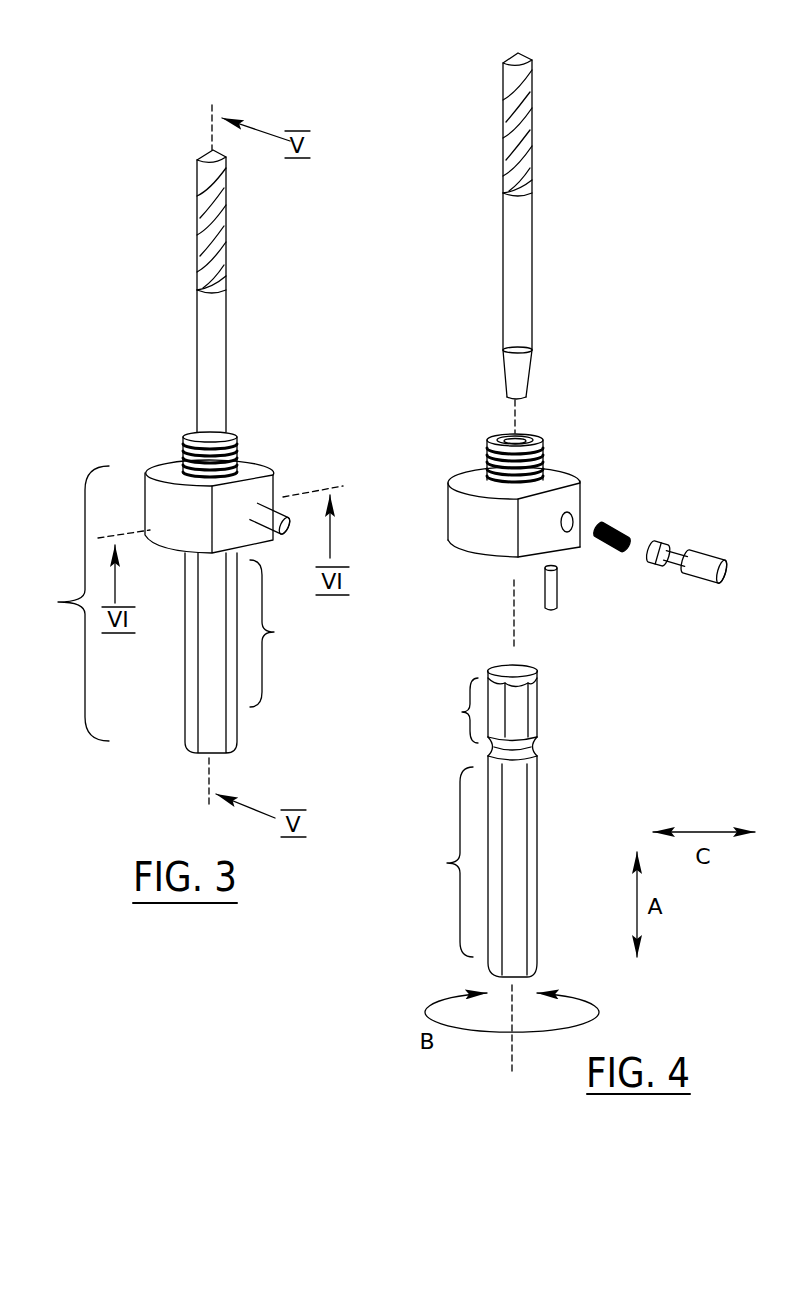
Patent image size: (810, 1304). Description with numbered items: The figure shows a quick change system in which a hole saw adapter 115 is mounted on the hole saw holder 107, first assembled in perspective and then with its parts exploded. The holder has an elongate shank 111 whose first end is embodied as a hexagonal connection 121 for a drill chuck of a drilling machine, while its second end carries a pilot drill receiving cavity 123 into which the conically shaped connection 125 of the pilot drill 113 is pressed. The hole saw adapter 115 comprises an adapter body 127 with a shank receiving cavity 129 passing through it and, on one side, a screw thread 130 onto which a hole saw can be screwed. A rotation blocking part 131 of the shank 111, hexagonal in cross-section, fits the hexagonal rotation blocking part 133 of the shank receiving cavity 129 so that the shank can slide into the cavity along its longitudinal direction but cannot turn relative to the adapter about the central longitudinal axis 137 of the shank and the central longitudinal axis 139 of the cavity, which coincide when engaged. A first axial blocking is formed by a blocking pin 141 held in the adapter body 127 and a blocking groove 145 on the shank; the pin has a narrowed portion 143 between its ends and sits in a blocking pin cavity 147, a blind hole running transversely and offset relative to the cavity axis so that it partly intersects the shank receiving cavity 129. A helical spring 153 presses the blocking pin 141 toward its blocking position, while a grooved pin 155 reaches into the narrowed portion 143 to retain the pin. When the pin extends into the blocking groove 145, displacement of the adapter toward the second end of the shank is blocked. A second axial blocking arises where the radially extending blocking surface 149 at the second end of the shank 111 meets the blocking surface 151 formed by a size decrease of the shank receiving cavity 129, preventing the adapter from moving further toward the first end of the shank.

In FIG. 3, the hole saw holder 107 is at (61, 603).
In FIG. 4, the elongate shank 111 is at (575, 788).
In FIG. 3, the pilot drill 113 is at (246, 329).
In FIG. 4, the pilot drill 113 is at (578, 252).
In FIG. 3, the hole saw adapter 115 is at (260, 442).
In FIG. 4, the hole saw adapter 115 is at (447, 491).
In FIG. 3, the connection 121 is at (250, 653).
In FIG. 4, the connection 121 is at (469, 866).
In FIG. 4, the pilot drill receiving cavity 123 is at (499, 661).
In FIG. 4, the conically shaped connection 125 is at (527, 343).
In FIG. 4, the adapter body 127 is at (560, 475).
In FIG. 4, the shank receiving cavity 129 is at (540, 421).
In FIG. 3, the screw thread 130 is at (183, 447).
In FIG. 4, the screw thread 130 is at (487, 452).
In FIG. 4, the rotation blocking part 131 is at (478, 704).
In FIG. 4, the rotation blocking part 133 is at (508, 440).
In FIG. 4, the central longitudinal axis 137 is at (510, 1052).
In FIG. 4, the central longitudinal axis 139 is at (518, 404).
In FIG. 4, the blocking pin 141 is at (712, 572).
In FIG. 4, the narrowed portion 143 is at (672, 578).
In FIG. 4, the blocking groove 145 is at (548, 745).
In FIG. 4, the blocking pin cavity 147 is at (573, 521).
In FIG. 4, the blocking surface 149 is at (533, 677).
In FIG. 4, the blocking surface 151 is at (478, 563).
In FIG. 4, the helical spring 153 is at (625, 528).
In FIG. 4, the grooved pin 155 is at (558, 597).